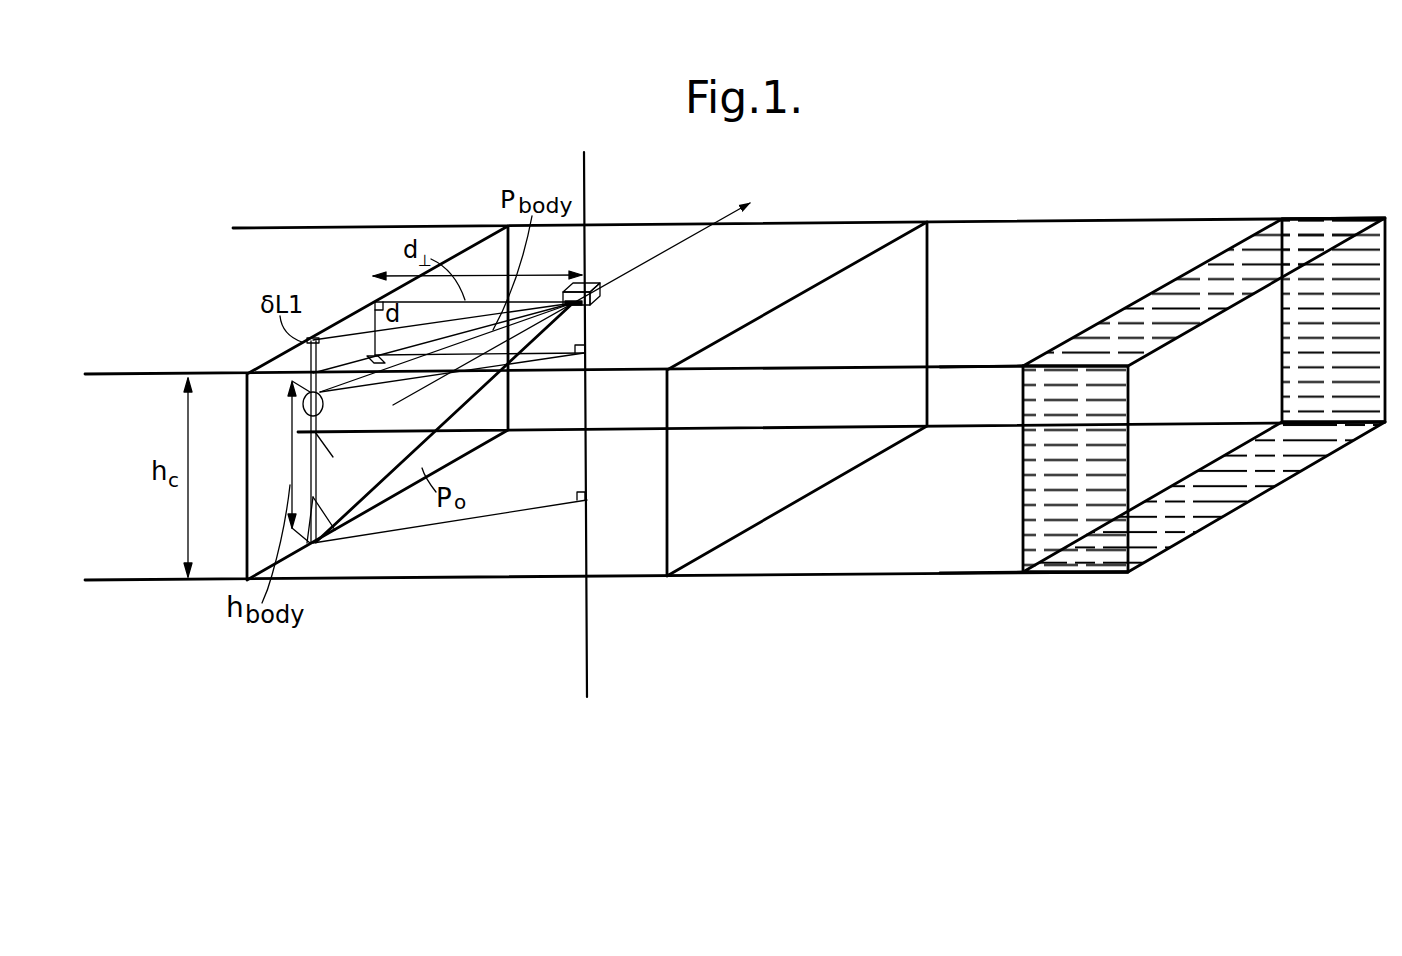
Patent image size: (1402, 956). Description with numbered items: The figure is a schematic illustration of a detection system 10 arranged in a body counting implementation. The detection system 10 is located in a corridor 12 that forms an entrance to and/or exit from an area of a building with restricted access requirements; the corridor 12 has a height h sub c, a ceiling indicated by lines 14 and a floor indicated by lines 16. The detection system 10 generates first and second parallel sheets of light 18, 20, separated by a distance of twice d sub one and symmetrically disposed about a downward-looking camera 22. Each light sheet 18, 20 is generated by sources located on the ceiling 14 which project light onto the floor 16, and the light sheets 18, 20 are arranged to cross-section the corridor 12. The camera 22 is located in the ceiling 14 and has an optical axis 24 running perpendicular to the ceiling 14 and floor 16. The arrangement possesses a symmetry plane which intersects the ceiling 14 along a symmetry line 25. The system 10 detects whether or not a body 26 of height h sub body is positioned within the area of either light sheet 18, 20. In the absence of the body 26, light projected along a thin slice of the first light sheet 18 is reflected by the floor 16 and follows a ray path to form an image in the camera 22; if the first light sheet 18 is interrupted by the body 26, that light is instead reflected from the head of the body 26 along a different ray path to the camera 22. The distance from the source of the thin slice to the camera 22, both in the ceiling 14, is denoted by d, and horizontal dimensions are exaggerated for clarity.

The detection system 10 is at (302, 204).
The corridor 12 is at (1190, 385).
The ceiling 14 is at (985, 366).
The floor 16 is at (975, 430).
The first light sheet 18 is at (480, 263).
The second light sheet 20 is at (895, 278).
The camera 22 is at (591, 283).
The optical axis 24 is at (586, 183).
The symmetry line 25 is at (736, 213).
The body 26 is at (298, 478).